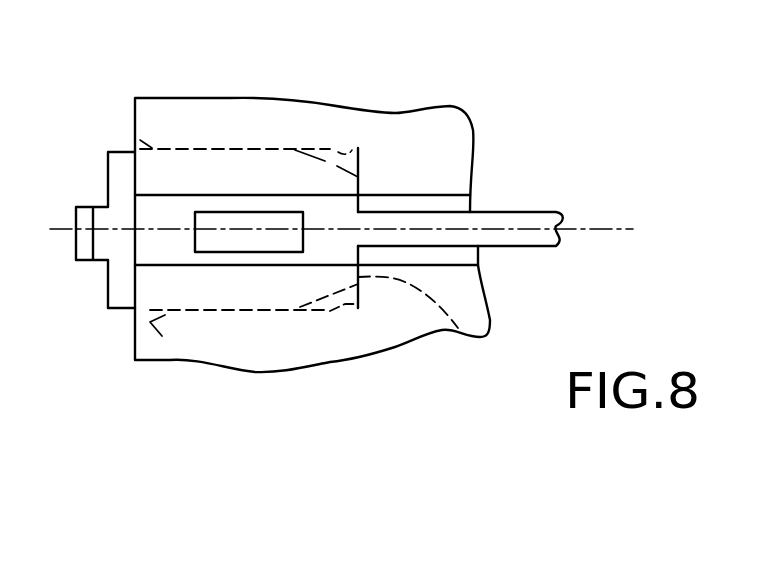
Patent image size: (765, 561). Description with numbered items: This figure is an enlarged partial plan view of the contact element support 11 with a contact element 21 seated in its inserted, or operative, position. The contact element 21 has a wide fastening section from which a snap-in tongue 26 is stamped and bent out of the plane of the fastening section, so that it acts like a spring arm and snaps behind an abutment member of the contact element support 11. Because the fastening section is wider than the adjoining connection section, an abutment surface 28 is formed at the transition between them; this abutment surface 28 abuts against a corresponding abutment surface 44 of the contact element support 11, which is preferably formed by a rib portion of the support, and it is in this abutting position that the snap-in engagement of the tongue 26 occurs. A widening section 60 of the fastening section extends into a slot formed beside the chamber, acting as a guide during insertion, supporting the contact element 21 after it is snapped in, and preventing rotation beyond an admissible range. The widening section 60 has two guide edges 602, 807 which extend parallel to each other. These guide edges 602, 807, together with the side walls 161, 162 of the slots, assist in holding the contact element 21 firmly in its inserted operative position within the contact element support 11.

The contact element support 11 is at (426, 122).
The contact element 21 is at (505, 238).
The snap-in tongue 26 is at (215, 245).
The abutment surface 28 is at (458, 328).
The abutment surface 44 is at (330, 313).
The widening section 60 is at (172, 167).
The side wall 161 is at (147, 313).
The side wall 162 is at (330, 148).
The guide edge 602 is at (220, 308).
The guide edge 807 is at (203, 150).